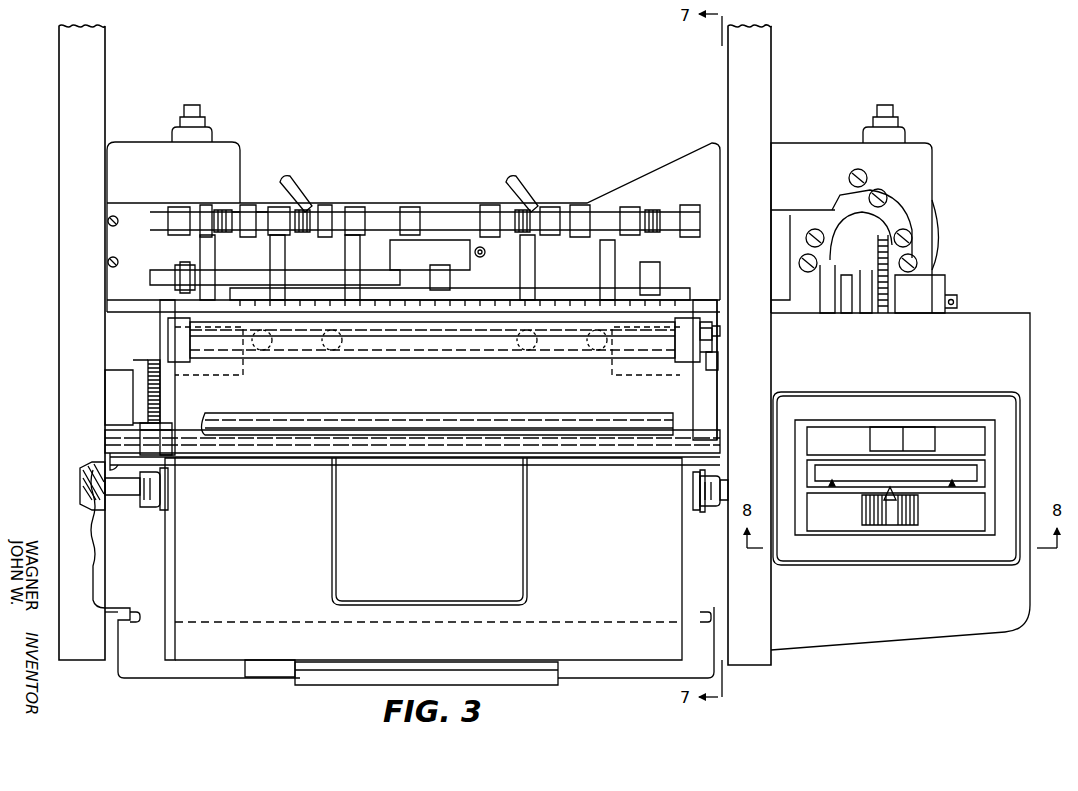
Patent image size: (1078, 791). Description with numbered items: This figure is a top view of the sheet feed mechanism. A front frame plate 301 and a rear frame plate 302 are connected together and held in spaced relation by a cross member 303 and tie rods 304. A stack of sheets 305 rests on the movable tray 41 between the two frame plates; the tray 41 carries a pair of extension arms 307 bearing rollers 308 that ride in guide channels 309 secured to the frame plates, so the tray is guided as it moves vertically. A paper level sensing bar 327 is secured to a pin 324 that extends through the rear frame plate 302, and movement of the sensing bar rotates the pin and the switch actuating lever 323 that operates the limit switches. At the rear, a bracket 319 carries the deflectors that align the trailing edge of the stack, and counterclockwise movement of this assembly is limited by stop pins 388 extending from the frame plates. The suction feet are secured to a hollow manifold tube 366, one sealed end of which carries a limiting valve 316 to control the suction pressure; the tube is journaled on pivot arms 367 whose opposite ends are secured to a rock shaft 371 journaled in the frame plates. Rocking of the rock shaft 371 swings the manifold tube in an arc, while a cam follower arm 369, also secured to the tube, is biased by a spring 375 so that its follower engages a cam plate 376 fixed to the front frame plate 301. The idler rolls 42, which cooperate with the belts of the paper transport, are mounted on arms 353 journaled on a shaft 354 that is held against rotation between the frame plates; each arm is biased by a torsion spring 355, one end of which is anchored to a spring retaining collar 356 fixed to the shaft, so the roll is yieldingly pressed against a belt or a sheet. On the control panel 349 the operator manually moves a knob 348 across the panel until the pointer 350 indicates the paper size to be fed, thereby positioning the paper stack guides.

The front frame plate 301 is at (105, 63).
The rear frame plate 302 is at (771, 63).
The cross member 303 is at (640, 175).
The tie rods 304 is at (343, 413).
The stack of sheets 305 is at (212, 668).
The extension arms 307 is at (170, 488).
The rollers 308 is at (162, 500).
The guide channels 309 is at (162, 506).
The limiting valve 316 is at (716, 332).
The bracket 319 is at (636, 688).
The switch actuating lever 323 is at (716, 392).
The pin 324 is at (718, 364).
The paper level sensing bar 327 is at (528, 512).
The knob 348 is at (862, 512).
The control panel 349 is at (1020, 483).
The pointer 350 is at (900, 492).
The arms 353 is at (178, 268).
The shaft 354 is at (238, 205).
The torsion spring 355 is at (222, 192).
The spring retaining collar 356 is at (304, 208).
The manifold tube 366 is at (420, 358).
The pivot arms 367 is at (166, 386).
The cam follower arm 369 is at (130, 366).
The rock shaft 371 is at (195, 448).
The spring 375 is at (160, 412).
The cam plate 376 is at (118, 390).
The stop pins 388 is at (130, 622).
The tray 41 is at (612, 624).
The idler rolls 42 is at (210, 283).